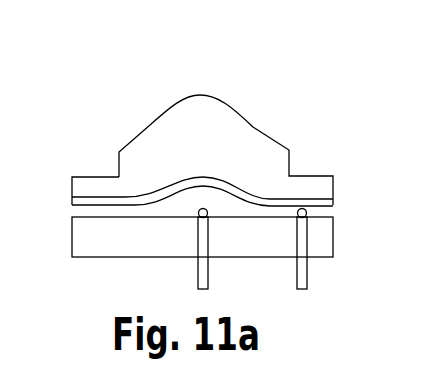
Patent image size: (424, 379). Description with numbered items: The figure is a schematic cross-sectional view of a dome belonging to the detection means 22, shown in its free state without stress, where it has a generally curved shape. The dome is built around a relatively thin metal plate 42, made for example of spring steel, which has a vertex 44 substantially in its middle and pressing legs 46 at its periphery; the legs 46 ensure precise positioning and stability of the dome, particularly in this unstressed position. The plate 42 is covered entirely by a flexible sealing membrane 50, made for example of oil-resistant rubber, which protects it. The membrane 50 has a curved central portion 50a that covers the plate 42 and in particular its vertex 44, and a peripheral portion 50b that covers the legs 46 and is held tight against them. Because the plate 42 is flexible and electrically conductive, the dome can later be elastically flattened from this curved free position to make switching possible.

The detection means 22 is at (231, 158).
The metal plate 42 is at (243, 192).
The vertex 44 is at (203, 183).
The pressing legs 46 is at (92, 203).
The flexible sealing membrane 50 is at (218, 111).
The central portion 50a is at (161, 113).
The peripheral portion 50b is at (305, 176).